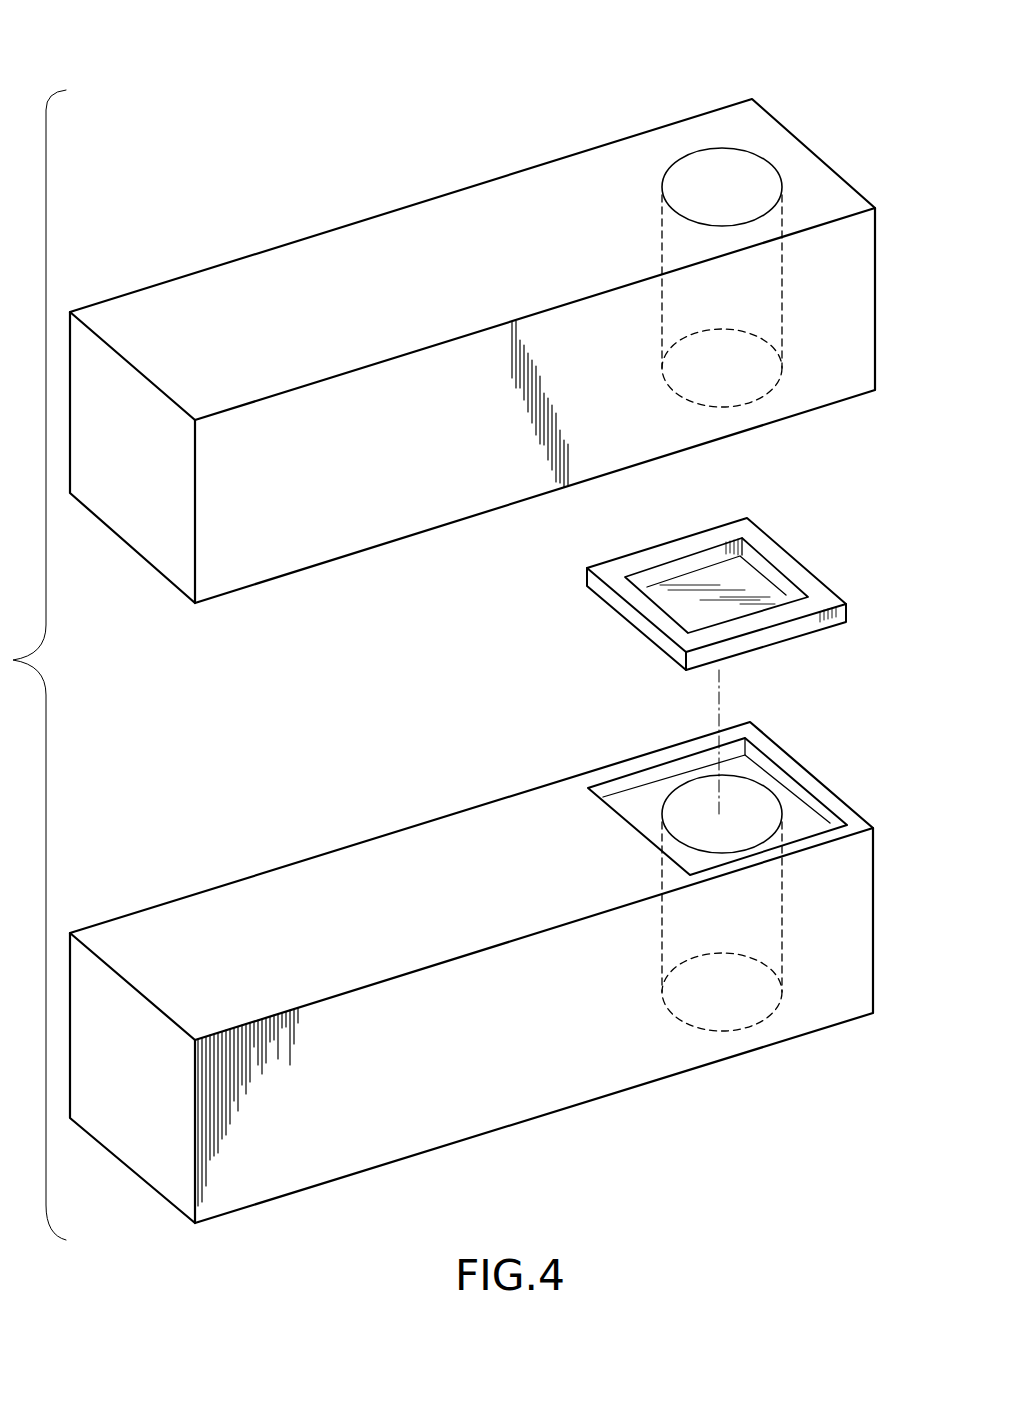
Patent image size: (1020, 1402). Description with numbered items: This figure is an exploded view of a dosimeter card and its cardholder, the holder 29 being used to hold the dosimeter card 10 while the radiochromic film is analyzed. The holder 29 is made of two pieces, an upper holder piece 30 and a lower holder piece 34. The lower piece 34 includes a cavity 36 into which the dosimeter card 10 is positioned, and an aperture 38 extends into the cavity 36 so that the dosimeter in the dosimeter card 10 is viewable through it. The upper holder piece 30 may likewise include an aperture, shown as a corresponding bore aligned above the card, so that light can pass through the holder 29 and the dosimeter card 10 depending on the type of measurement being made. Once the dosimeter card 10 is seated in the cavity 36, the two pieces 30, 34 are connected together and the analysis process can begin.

The holder 29 is at (704, 76).
The holder piece 30 is at (412, 201).
The aperture 38 is at (780, 177).
The dosimeter card 10 is at (770, 645).
The holder piece 34 is at (473, 1140).
The cavity 36 is at (702, 872).